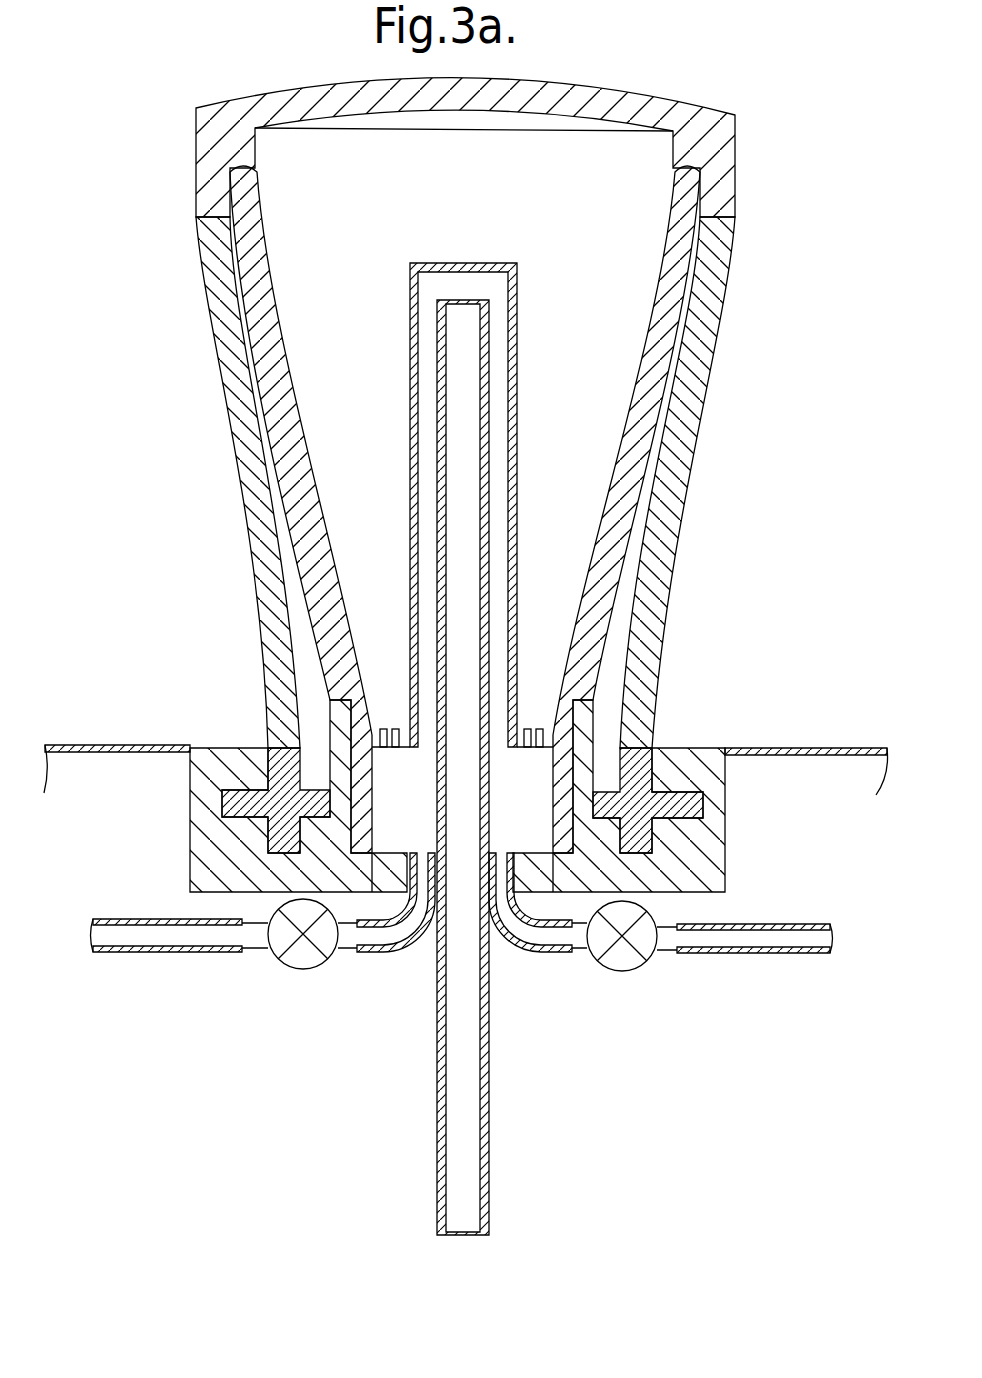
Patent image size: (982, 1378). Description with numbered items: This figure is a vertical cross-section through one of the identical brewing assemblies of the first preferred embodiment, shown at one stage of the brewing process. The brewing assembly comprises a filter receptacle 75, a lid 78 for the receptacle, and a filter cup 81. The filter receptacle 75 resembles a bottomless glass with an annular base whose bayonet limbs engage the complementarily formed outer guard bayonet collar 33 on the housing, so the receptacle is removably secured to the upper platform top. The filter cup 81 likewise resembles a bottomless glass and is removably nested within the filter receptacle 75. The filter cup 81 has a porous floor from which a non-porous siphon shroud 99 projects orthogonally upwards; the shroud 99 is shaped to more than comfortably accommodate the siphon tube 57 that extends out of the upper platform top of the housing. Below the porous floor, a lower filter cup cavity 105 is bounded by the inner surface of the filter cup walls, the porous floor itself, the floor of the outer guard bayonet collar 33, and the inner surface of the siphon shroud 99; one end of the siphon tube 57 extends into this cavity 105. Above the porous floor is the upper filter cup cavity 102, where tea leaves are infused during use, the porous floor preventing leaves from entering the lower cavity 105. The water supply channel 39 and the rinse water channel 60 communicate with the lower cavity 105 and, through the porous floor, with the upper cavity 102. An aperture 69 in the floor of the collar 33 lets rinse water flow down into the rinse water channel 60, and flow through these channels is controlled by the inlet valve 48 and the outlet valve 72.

The lid 78 is at (213, 139).
The filter receptacle 75 is at (205, 266).
The filter cup 81 is at (272, 380).
The upper filter cup cavity 102 is at (604, 405).
The siphon shroud 99 is at (413, 484).
The siphon tube 57 is at (436, 605).
The lower filter cup cavity 105 is at (393, 783).
The aperture 69 is at (505, 847).
The outer guard bayonet collar 33 is at (210, 846).
The water supply channel 39 is at (148, 953).
The inlet valve 48 is at (290, 969).
The outlet valve 72 is at (622, 971).
The rinse water channel 60 is at (757, 953).